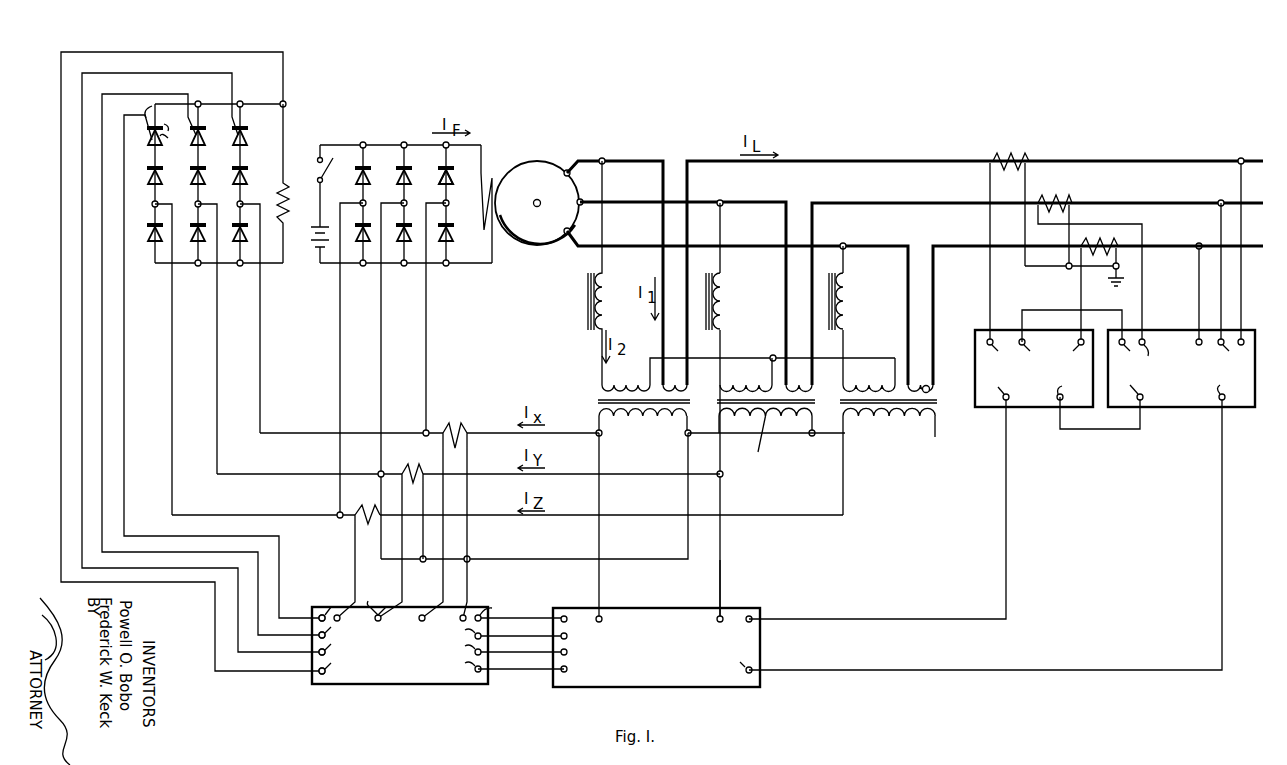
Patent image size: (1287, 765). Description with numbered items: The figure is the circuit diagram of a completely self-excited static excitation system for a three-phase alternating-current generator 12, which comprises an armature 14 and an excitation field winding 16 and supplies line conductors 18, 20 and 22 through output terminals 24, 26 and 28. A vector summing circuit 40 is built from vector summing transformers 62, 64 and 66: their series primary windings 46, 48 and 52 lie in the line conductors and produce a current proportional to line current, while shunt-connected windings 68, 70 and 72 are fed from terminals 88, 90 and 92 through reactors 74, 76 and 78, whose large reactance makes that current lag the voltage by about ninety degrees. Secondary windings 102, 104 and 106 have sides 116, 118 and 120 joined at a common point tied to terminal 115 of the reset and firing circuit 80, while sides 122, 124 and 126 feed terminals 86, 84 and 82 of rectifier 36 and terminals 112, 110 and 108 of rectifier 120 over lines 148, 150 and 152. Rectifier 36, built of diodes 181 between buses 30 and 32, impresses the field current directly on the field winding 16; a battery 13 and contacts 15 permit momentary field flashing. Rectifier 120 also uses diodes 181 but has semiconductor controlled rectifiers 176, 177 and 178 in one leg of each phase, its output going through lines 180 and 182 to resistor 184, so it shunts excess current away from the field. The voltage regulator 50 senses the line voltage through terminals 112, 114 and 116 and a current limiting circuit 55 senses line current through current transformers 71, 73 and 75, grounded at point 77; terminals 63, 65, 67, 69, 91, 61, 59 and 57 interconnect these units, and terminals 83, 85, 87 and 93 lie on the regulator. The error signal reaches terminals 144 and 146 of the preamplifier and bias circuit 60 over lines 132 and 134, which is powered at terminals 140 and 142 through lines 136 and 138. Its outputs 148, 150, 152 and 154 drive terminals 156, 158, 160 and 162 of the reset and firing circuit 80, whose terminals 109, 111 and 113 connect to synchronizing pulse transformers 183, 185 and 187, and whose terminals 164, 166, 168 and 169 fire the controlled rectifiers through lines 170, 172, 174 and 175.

The three-phase alternating-current generator 12 is at (543, 153).
The battery 13 is at (312, 236).
The armature 14 is at (550, 246).
The contacts 15 is at (330, 150).
The excitation field winding 16 is at (486, 185).
The line conductor 18 is at (882, 161).
The line conductor 20 is at (893, 203).
The line conductor 22 is at (907, 246).
The output terminal 24 is at (571, 174).
The output terminal 26 is at (584, 200).
The output terminal 28 is at (571, 231).
The positive bus of rectifier 30 is at (355, 145).
The negative bus of rectifier 32 is at (345, 263).
The rectifier 36 is at (406, 186).
The vector summing circuit 40 is at (777, 475).
The primary winding 46 is at (680, 385).
The primary winding 48 is at (804, 385).
The voltage regulator 50 is at (1185, 381).
The primary winding 52 is at (930, 389).
The current limiting circuit 55 is at (1043, 388).
The terminal 57 is at (993, 388).
The terminal 59 is at (1098, 403).
The preamplifier and bias circuit 60 is at (657, 668).
The terminal 61 is at (1127, 388).
The vector summing transformer 62 is at (588, 405).
The terminal 63 is at (992, 353).
The vector summing transformer 64 is at (837, 408).
The terminal 65 is at (1069, 338).
The vector summing transformer 66 is at (959, 413).
The terminal 67 is at (1077, 353).
The primary winding 68 is at (639, 376).
The terminal 69 is at (1125, 353).
The primary winding 70 is at (727, 385).
The current transformer 71 is at (1020, 140).
The primary winding 72 is at (848, 385).
The current transformer 73 is at (1066, 183).
The inductive reactor 74 is at (603, 300).
The current transformer 75 is at (1113, 244).
The reactor 76 is at (721, 302).
The ground point 77 is at (1118, 287).
The reactor 78 is at (845, 302).
The reset and firing circuit 80 is at (404, 660).
The terminal 82 is at (358, 201).
The terminal 83 is at (1196, 338).
The terminal 84 is at (400, 201).
The terminal 85 is at (1221, 353).
The terminal 86 is at (442, 201).
The terminal 87 is at (1244, 338).
The terminal 88 is at (615, 160).
The terminal 90 is at (724, 190).
The terminal 91 is at (1150, 353).
The terminal 92 is at (848, 238).
The terminal 93 is at (1232, 388).
The secondary winding 102 is at (632, 418).
The secondary winding 104 is at (763, 450).
The secondary winding 106 is at (886, 416).
The terminal 108 is at (169, 350).
The terminal 109 is at (327, 605).
The terminal 110 is at (212, 330).
The terminal 111 is at (382, 605).
The terminal 112 is at (1205, 241).
The terminal 113 is at (421, 605).
The terminal 114 is at (1228, 199).
The terminal 115 is at (478, 605).
The side of secondary winding 116 is at (688, 433).
The side of secondary winding 118 is at (791, 422).
The rectifier 120 is at (320, 100).
The side of secondary winding 122 is at (599, 433).
The side of secondary winding 124 is at (1221, 285).
The side of secondary winding 126 is at (1253, 274).
The line 132 is at (892, 619).
The line 134 is at (922, 671).
The line 136 is at (597, 583).
The line 138 is at (716, 580).
The terminal 140 is at (606, 617).
The terminal 142 is at (716, 617).
The terminal 144 is at (748, 622).
The terminal 146 is at (729, 671).
The line 148 is at (503, 426).
The line 150 is at (503, 474).
The line 152 is at (503, 516).
The terminal 154 is at (539, 669).
The terminal 156 is at (500, 610).
The terminal 158 is at (460, 636).
The terminal 160 is at (460, 652).
The terminal 162 is at (460, 669).
The terminal 164 is at (318, 614).
The terminal 166 is at (340, 635).
The terminal 168 is at (340, 652).
The terminal 169 is at (340, 671).
The line 170 is at (165, 536).
The line 172 is at (258, 558).
The line 174 is at (238, 576).
The line 175 is at (280, 672).
The semiconductor controlled rectifier 176 is at (165, 130).
The semiconductor controlled rectifier 177 is at (199, 141).
The semiconductor controlled rectifier 178 is at (244, 141).
The line 180 is at (272, 104).
The semiconductor diode 181 is at (246, 176).
The line 182 is at (262, 263).
The synchronizing pulse transformer 183 is at (376, 507).
The resistor 184 is at (284, 183).
The synchronizing pulse transformer 185 is at (424, 465).
The synchronizing pulse transformer 187 is at (465, 423).